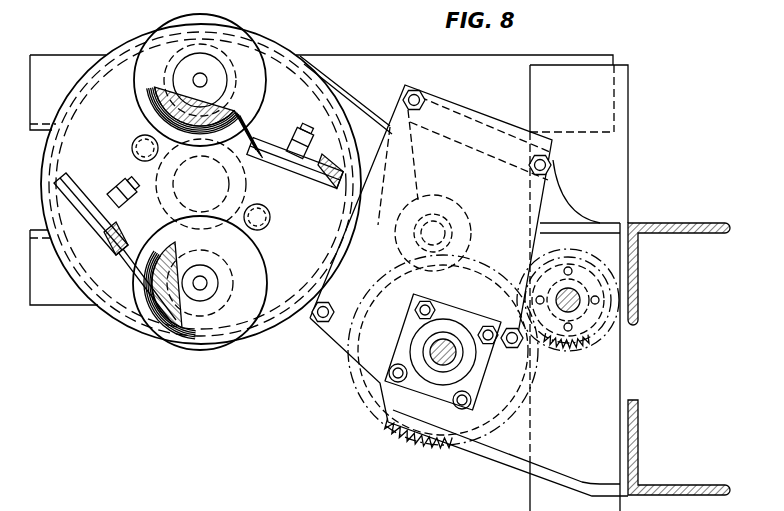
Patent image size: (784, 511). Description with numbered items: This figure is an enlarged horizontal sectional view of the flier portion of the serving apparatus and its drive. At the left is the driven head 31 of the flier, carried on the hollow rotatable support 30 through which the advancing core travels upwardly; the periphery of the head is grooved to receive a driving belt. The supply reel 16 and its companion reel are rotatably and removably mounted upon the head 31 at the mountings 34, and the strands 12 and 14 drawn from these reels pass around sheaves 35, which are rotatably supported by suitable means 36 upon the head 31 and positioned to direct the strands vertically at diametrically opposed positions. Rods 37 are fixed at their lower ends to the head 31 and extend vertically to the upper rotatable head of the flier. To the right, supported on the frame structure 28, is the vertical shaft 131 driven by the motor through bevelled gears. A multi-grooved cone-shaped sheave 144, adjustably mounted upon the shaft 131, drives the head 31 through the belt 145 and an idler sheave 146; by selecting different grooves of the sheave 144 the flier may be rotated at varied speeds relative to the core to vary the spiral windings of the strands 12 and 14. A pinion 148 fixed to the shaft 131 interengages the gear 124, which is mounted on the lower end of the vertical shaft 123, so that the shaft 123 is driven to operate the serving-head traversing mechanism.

The strand 12 is at (233, 156).
The strand 14 is at (132, 262).
The supply reel 16 is at (205, 338).
The frame structure 28 is at (700, 208).
The hollow rotatable support 30 is at (165, 213).
The driven head 31 is at (268, 327).
The reel mounting 34 is at (208, 82).
The sheave 35 is at (96, 240).
The sheave supporting means 36 is at (118, 188).
The rod 37 is at (137, 138).
The vertical shaft 123 is at (440, 350).
The gear 124 is at (383, 422).
The vertical shaft 131 is at (572, 314).
The multi-grooved cone-shaped sheave 144 is at (488, 256).
The belt 145 is at (346, 80).
The idler sheave 146 is at (420, 165).
The pinion 148 is at (556, 356).